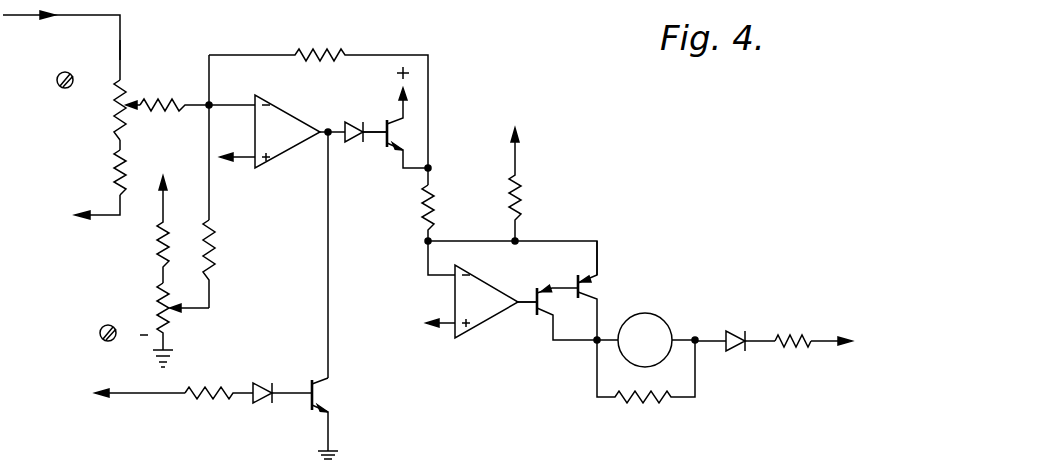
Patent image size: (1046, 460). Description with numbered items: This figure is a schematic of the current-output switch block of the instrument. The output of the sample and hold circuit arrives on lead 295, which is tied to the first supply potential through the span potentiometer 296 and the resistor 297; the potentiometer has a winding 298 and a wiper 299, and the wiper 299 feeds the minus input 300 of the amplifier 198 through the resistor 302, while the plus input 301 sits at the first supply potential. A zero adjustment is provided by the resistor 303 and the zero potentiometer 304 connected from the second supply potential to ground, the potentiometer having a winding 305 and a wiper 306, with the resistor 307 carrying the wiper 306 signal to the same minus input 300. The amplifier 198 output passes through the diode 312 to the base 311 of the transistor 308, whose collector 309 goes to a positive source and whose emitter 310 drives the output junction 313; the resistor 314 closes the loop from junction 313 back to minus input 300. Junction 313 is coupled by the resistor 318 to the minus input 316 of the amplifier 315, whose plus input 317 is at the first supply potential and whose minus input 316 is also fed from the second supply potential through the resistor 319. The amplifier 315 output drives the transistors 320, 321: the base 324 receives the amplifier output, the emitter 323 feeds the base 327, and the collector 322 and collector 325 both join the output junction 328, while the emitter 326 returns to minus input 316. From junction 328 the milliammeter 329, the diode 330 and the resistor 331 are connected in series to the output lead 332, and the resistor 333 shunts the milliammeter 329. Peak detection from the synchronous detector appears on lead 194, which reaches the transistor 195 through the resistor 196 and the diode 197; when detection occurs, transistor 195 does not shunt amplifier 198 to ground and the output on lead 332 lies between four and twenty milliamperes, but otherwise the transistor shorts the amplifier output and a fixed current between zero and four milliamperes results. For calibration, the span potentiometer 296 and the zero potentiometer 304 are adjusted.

The lead 194 is at (128, 396).
The transistor 195 is at (305, 374).
The resistor 196 is at (207, 388).
The diode 197 is at (258, 404).
The amplifier 198 is at (285, 158).
The lead 295 is at (110, 15).
The span potentiometer 296 is at (142, 60).
The resistor 297 is at (112, 168).
The winding 298 is at (112, 125).
The wiper 299 is at (136, 100).
The minus input 300 is at (227, 104).
The plus input 301 is at (250, 164).
The resistor 302 is at (176, 96).
The resistor 303 is at (158, 238).
The zero potentiometer 304 is at (143, 340).
The winding 305 is at (158, 300).
The wiper 306 is at (193, 312).
The resistor 307 is at (215, 236).
The transistor 308 is at (393, 153).
The collector 309 is at (398, 117).
The emitter 310 is at (396, 140).
The base 311 is at (374, 134).
The diode 312 is at (355, 120).
The output junction 313 is at (431, 168).
The resistor 314 is at (342, 53).
The amplifier 315 is at (480, 329).
The minus input 316 is at (437, 272).
The plus input 317 is at (447, 327).
The resistor 318 is at (435, 200).
The resistor 319 is at (522, 201).
The transistor 320 is at (541, 316).
The transistor 321 is at (600, 314).
The collector 322 is at (567, 323).
The emitter 323 is at (543, 289).
The base 324 is at (520, 298).
The collector 325 is at (598, 297).
The emitter 326 is at (598, 282).
The base 327 is at (601, 290).
The output junction 328 is at (596, 344).
The milliammeter 329 is at (670, 322).
The diode 330 is at (734, 352).
The resistor 331 is at (784, 337).
The output lead 332 is at (816, 346).
The resistor 333 is at (674, 399).